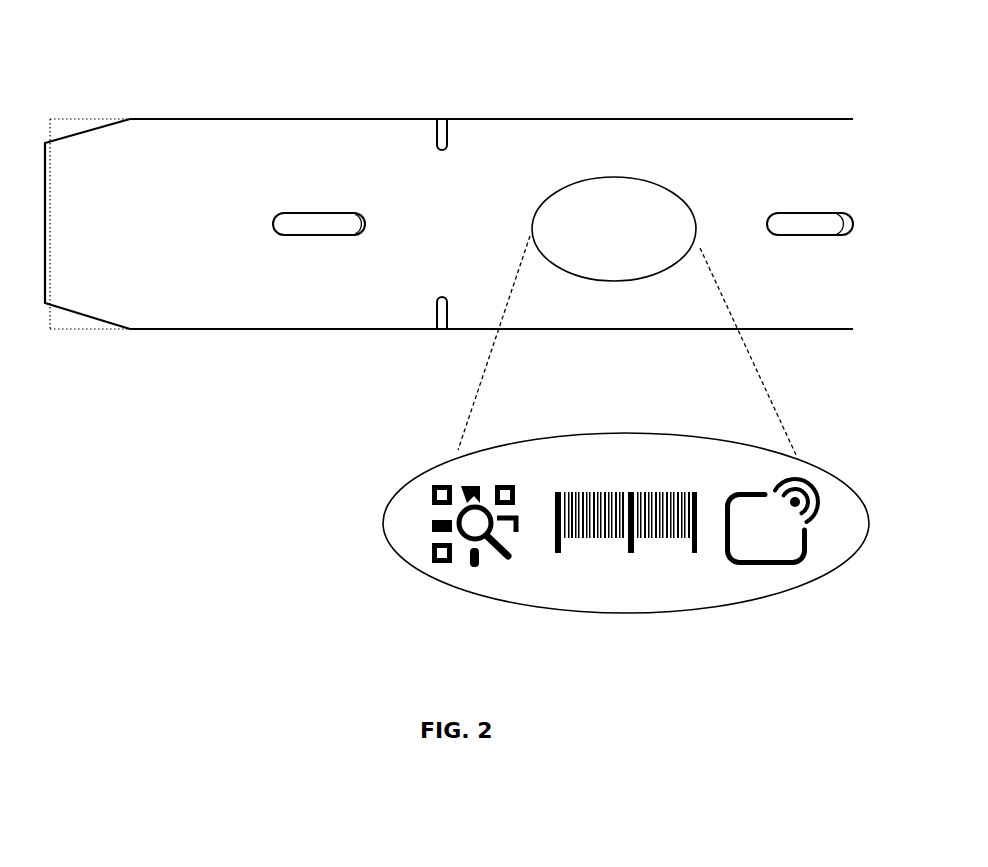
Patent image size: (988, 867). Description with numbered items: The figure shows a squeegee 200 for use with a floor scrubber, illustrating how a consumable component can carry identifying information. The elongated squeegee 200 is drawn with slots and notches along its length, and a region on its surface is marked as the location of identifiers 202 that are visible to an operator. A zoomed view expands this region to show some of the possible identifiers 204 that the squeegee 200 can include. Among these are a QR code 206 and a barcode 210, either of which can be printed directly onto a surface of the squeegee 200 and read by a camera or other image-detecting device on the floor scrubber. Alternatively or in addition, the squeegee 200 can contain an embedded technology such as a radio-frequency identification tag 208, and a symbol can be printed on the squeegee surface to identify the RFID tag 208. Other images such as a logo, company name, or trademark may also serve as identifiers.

The squeegee 200 is at (706, 62).
The identifiers 202 is at (665, 182).
The possible identifiers 204 is at (412, 567).
The QR code 206 is at (497, 553).
The radio-frequency identification (RFID) tag 208 is at (807, 560).
The barcode 210 is at (682, 553).